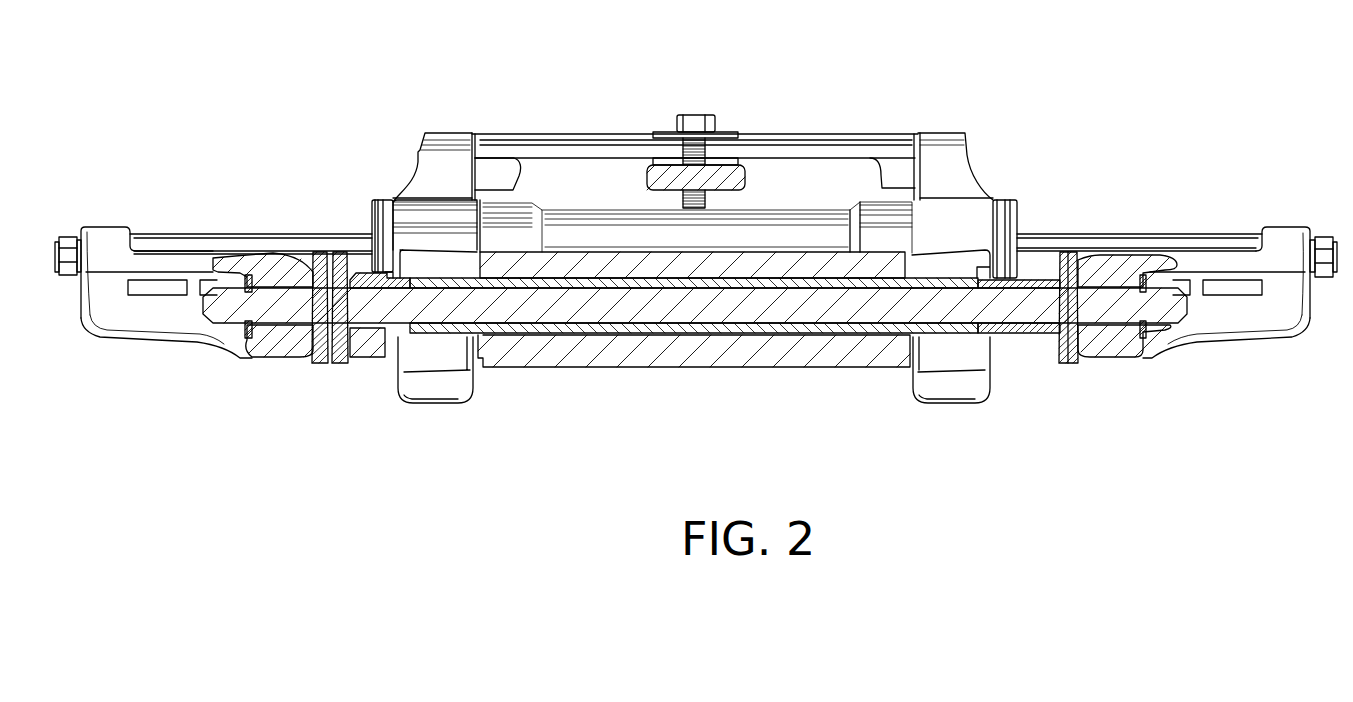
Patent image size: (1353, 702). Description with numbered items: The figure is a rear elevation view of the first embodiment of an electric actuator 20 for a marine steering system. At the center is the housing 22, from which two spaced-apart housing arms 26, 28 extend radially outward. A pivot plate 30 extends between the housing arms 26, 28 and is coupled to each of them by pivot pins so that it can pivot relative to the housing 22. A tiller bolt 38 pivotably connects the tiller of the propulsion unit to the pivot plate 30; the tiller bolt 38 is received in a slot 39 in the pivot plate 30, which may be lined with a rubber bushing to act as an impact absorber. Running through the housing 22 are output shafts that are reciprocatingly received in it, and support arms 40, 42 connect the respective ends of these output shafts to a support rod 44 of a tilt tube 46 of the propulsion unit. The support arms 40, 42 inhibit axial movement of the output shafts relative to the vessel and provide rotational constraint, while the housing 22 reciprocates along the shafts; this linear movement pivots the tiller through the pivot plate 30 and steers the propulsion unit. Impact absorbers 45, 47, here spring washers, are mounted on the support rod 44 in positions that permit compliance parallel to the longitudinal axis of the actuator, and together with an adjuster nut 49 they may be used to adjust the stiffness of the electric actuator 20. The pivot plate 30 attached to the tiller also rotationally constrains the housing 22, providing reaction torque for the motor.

The electric actuator 20 is at (392, 161).
The housing 22 is at (981, 182).
The housing arm 26 is at (945, 143).
The housing arm 28 is at (447, 167).
The pivot plate 30 is at (870, 140).
The tiller bolt 38 is at (698, 122).
The slot 39 is at (700, 148).
The support arm 40 is at (1255, 322).
The support arm 42 is at (142, 323).
The support rod 44 is at (632, 305).
The impact absorber 45 is at (317, 364).
The tilt tube 46 is at (770, 337).
The impact absorber 47 is at (1070, 364).
The adjuster nut 49 is at (365, 348).